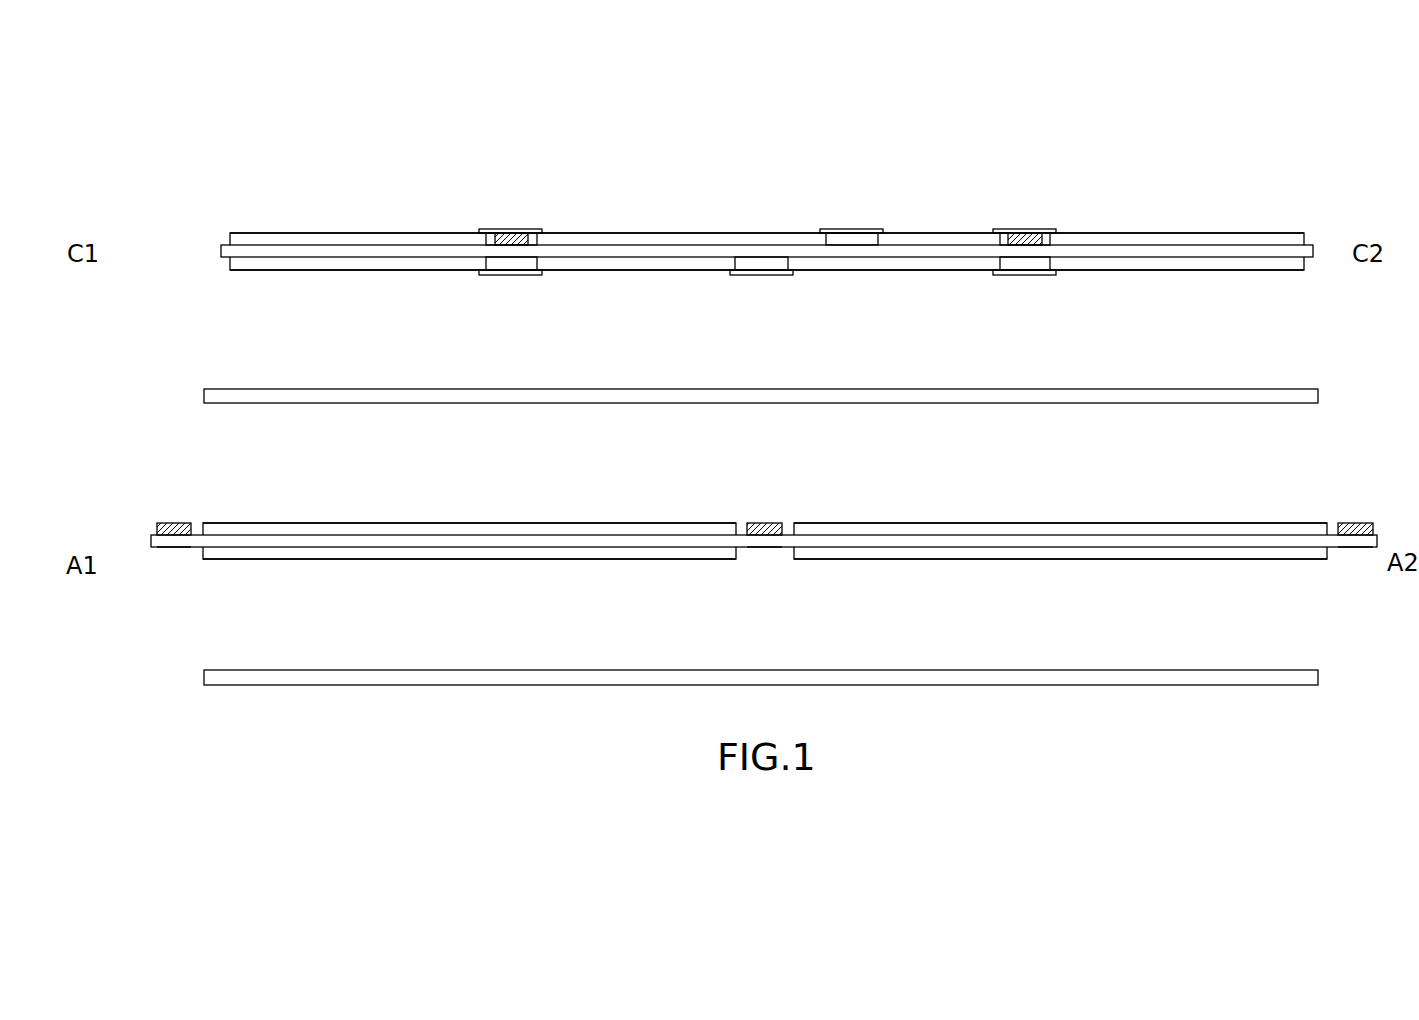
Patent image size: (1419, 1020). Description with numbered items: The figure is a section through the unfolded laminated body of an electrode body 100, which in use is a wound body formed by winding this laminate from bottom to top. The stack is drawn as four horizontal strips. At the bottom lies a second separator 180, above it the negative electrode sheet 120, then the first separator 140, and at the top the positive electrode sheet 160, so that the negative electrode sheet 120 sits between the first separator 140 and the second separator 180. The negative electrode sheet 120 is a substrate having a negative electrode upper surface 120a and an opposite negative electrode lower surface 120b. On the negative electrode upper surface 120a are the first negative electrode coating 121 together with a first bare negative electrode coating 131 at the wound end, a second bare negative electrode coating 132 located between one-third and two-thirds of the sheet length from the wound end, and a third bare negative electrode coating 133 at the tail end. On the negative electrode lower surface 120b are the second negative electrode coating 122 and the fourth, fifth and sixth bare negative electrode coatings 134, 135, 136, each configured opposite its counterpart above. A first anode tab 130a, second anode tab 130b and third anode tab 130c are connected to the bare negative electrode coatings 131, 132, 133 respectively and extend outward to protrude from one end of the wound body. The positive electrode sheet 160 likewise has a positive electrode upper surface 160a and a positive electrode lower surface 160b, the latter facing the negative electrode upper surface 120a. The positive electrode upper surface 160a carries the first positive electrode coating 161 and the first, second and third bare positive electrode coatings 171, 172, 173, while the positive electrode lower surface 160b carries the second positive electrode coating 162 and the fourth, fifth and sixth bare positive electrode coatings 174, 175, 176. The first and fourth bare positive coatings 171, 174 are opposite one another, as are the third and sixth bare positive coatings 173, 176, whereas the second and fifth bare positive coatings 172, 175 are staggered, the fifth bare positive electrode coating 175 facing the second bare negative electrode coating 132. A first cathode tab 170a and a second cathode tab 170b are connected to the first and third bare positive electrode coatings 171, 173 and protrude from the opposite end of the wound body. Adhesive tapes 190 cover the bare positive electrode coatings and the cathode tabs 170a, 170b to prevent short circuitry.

The electrode body 100 is at (198, 105).
The negative electrode sheet 120 is at (138, 541).
The negative electrode upper surface 120a is at (431, 523).
The negative electrode lower surface 120b is at (431, 559).
The first negative electrode coating 121 is at (492, 532).
The second negative electrode coating 122 is at (492, 551).
The first anode tab 130a is at (186, 523).
The second anode tab 130b is at (776, 523).
The third anode tab 130c is at (1357, 523).
The first bare negative electrode coating 131 is at (175, 504).
The second bare negative electrode coating 132 is at (765, 504).
The third bare negative electrode coating 133 is at (1345, 504).
The fourth bare negative electrode coating 134 is at (173, 555).
The fifth bare negative electrode coating 135 is at (765, 555).
The sixth bare negative electrode coating 136 is at (1345, 555).
The first separator 140 is at (186, 395).
The positive electrode sheet 160 is at (189, 248).
The positive electrode upper surface 160a is at (292, 233).
The positive electrode lower surface 160b is at (293, 270).
The first positive electrode coating 161 is at (354, 243).
The second positive electrode coating 162 is at (355, 261).
The first cathode tab 170a is at (521, 240).
The second cathode tab 170b is at (1036, 240).
The first bare positive electrode coating 171 is at (513, 227).
The second bare positive electrode coating 172 is at (851, 227).
The third bare positive electrode coating 173 is at (1023, 227).
The fourth bare positive electrode coating 174 is at (512, 287).
The fifth bare positive electrode coating 175 is at (767, 287).
The sixth bare positive electrode coating 176 is at (1022, 287).
The second separator 180 is at (186, 675).
The adhesive tapes 190 is at (481, 231).